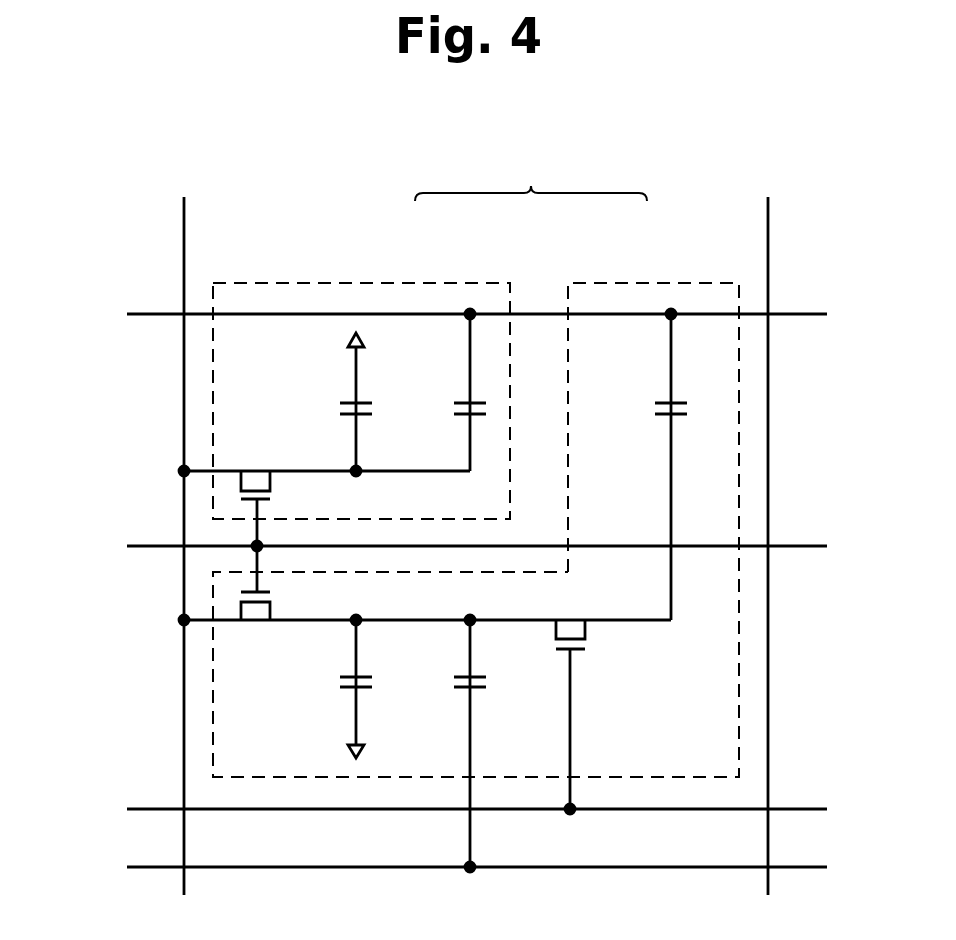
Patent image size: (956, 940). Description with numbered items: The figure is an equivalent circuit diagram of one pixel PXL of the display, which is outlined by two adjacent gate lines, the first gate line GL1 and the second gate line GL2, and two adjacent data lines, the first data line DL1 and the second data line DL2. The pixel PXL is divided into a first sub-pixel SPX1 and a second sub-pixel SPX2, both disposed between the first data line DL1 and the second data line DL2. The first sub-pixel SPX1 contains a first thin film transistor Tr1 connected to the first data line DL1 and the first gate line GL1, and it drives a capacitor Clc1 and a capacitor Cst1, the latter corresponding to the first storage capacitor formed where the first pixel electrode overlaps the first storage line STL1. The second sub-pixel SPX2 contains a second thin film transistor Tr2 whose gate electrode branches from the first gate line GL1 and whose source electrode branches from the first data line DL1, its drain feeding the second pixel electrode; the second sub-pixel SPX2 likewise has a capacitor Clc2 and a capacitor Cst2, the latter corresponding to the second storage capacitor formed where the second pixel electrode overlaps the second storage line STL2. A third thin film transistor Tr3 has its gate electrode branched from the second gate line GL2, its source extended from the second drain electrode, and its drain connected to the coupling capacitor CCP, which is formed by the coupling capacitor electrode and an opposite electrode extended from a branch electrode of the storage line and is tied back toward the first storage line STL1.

The first data line DL1 is at (181, 531).
The second data line DL2 is at (752, 531).
The first storage line STL1 is at (446, 314).
The second storage line STL2 is at (448, 867).
The first gate line GL1 is at (452, 545).
The second gate line GL2 is at (455, 809).
The pixel PXL is at (531, 180).
The first sub-pixel SPX1 is at (437, 283).
The second sub-pixel SPX2 is at (612, 283).
The first thin film transistor Tr1 is at (324, 495).
The second thin film transistor Tr2 is at (425, 598).
The third thin film transistor Tr3 is at (570, 702).
The first liquid crystal capacitor Clc1 is at (327, 404).
The second liquid crystal capacitor Clc2 is at (327, 686).
The first storage capacitor Cst1 is at (441, 390).
The second storage capacitor Cst2 is at (441, 743).
The coupling capacitor CCP is at (648, 464).